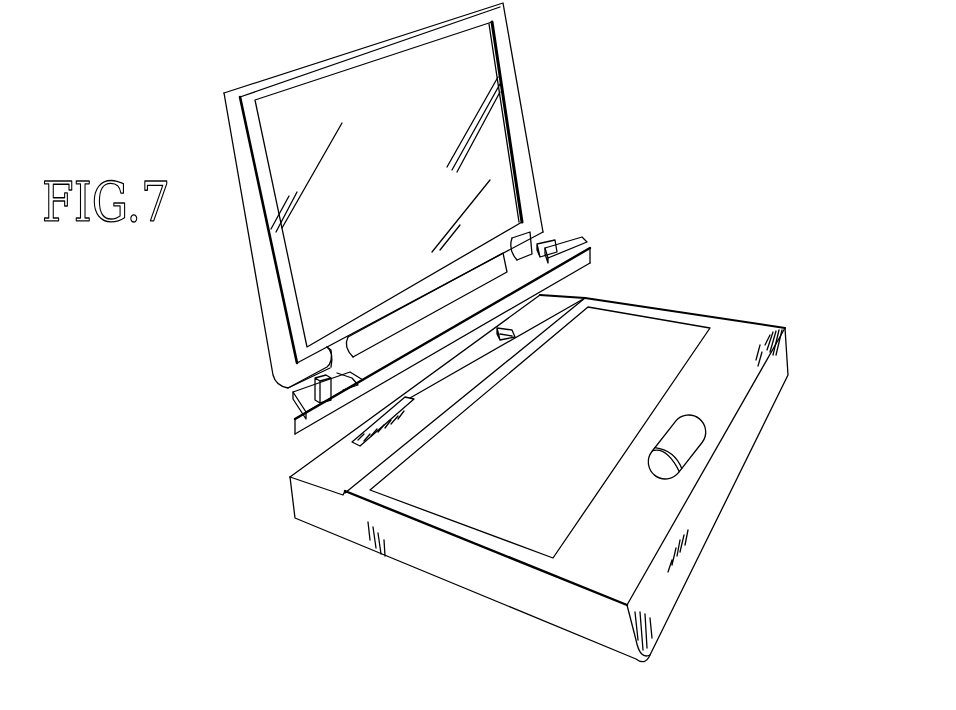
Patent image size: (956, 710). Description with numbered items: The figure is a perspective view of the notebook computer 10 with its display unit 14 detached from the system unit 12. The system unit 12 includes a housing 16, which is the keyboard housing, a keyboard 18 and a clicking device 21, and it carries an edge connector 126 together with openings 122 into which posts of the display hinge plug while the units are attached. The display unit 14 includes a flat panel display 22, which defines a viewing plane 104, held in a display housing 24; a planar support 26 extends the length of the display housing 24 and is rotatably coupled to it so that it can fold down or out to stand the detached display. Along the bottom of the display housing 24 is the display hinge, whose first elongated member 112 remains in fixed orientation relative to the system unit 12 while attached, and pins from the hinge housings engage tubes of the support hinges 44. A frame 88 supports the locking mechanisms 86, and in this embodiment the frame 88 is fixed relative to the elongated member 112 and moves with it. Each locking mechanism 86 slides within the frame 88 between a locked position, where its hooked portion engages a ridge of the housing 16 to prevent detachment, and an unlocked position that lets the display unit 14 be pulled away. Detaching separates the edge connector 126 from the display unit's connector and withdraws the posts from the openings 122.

The notebook computer 10 is at (654, 110).
The system unit 12 is at (748, 302).
The display unit 14 is at (203, 105).
The housing 16 is at (655, 308).
The keyboard 18 is at (550, 449).
The clicking device 21 is at (702, 415).
The flat panel display 22 is at (508, 148).
The display housing 24 is at (509, 52).
The planar support 26 is at (263, 327).
The support hinges 44 is at (543, 232).
The locking mechanism 86 is at (293, 414).
The frame 88 is at (430, 333).
The viewing plane 104 is at (413, 149).
The first elongated member 112 is at (473, 292).
The openings 122 is at (352, 441).
The edge connector 126 is at (403, 404).